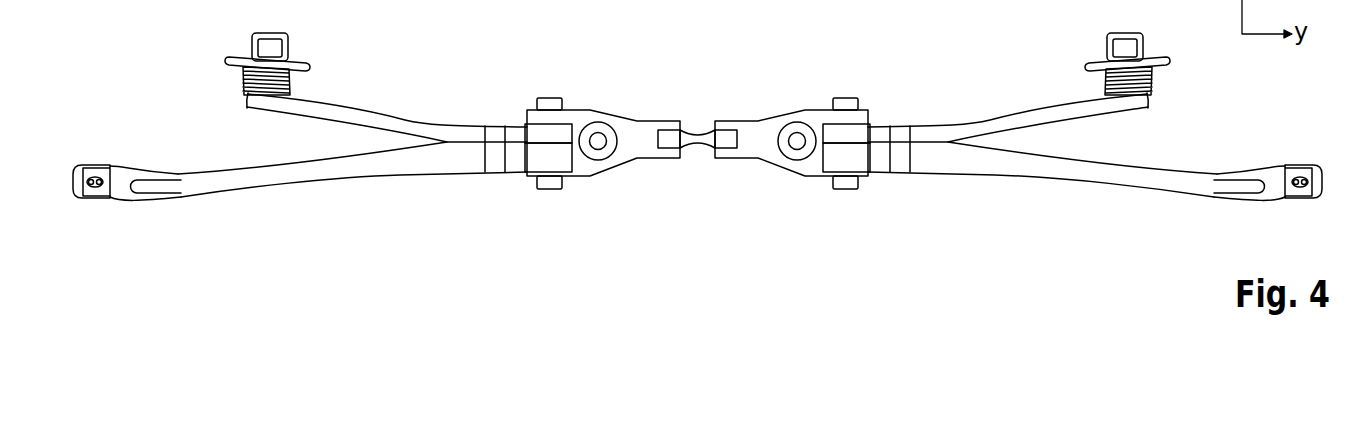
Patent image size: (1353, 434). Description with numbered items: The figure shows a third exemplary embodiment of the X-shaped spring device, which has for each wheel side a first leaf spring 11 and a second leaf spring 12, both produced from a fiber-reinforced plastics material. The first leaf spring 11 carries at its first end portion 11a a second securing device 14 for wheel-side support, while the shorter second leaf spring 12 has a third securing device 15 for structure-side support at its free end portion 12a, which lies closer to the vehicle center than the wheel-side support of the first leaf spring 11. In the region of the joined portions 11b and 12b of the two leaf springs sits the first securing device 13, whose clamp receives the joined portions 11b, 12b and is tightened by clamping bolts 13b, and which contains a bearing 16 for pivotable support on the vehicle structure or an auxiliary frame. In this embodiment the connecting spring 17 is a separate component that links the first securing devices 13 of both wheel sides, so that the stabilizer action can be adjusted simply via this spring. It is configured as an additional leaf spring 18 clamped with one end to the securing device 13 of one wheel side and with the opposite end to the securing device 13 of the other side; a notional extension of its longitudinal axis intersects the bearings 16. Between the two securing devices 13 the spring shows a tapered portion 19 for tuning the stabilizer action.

The first leaf spring 11 is at (380, 163).
The first end portion 11a is at (165, 202).
The joined portion 11b is at (535, 166).
The second leaf spring 12 is at (405, 124).
The free end portion 12a is at (247, 101).
The joined portion 12b is at (548, 132).
The first securing device 13 is at (638, 132).
The clamping bolts 13b is at (551, 190).
The second securing device 14 is at (124, 200).
The third securing device 15 is at (227, 60).
The bearing 16 is at (597, 140).
The connecting spring 17 is at (697, 142).
The additional leaf spring 18 is at (670, 150).
The web constriction 19 is at (703, 133).